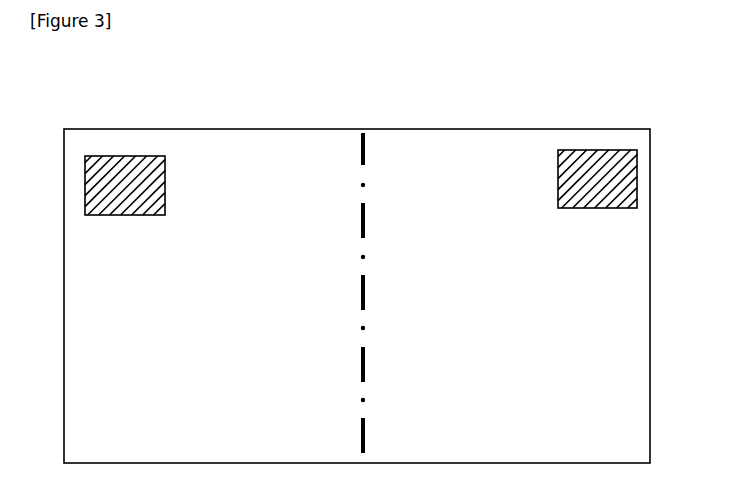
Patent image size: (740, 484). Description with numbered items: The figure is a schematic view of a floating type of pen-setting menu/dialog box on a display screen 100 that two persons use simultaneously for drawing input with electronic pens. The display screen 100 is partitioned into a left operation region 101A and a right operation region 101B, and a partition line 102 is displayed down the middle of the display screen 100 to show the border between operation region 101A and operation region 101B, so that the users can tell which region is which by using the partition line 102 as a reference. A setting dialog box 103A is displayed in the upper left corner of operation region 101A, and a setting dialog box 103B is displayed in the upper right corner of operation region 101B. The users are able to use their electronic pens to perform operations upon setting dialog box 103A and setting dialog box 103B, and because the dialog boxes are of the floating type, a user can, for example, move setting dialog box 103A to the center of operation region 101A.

The display screen 100 is at (410, 129).
The operation region 101A is at (212, 286).
The operation region 101B is at (522, 286).
The partition line 102 is at (354, 196).
The setting dialog box 103A is at (122, 157).
The setting dialog box 103B is at (591, 150).